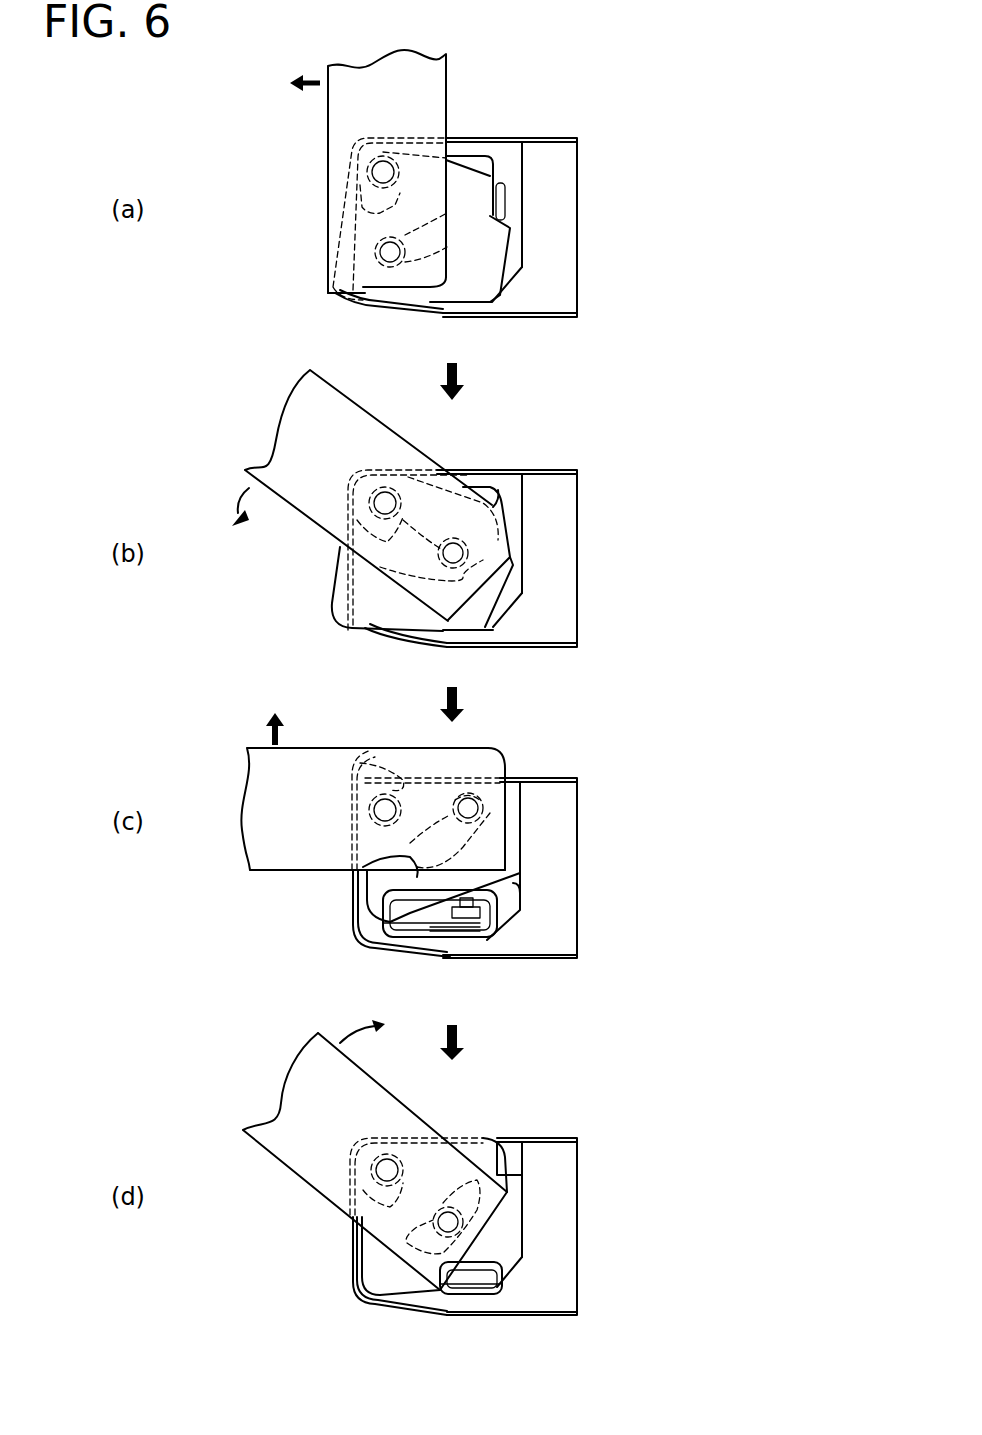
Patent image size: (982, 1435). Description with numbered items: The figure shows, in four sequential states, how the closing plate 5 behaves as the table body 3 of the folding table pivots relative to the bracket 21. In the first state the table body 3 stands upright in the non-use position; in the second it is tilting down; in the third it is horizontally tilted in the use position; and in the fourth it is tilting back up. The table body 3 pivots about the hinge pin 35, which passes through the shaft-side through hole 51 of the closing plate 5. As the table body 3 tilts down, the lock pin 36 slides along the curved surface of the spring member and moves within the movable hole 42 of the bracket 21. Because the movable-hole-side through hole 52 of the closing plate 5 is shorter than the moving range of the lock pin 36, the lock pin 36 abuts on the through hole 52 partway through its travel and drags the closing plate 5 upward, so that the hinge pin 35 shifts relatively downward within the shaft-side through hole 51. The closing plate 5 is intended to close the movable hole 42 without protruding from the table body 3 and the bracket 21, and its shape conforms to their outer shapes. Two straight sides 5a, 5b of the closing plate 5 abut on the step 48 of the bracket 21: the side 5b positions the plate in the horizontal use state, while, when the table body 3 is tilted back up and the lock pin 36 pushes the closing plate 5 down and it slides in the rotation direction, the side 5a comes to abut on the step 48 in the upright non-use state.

The table body 3 is at (378, 107).
The closing plate 5 is at (460, 204).
The side 5a is at (410, 307).
The side 5b is at (523, 832).
The bracket 21 is at (555, 170).
The hinge pin 35 is at (367, 167).
The lock pin 36 is at (373, 252).
The movable hole 42 is at (470, 157).
The step 48 is at (453, 300).
The shaft-side through hole 51 is at (350, 188).
The movable-hole-side through hole 52 is at (453, 240).